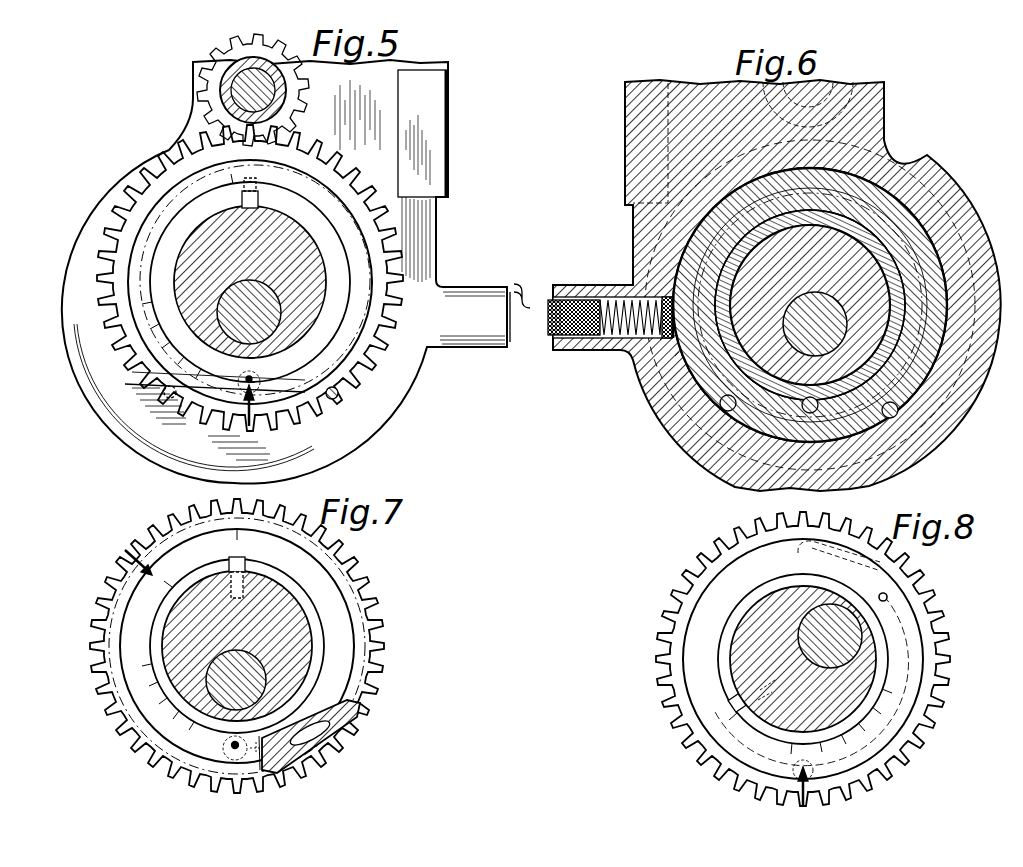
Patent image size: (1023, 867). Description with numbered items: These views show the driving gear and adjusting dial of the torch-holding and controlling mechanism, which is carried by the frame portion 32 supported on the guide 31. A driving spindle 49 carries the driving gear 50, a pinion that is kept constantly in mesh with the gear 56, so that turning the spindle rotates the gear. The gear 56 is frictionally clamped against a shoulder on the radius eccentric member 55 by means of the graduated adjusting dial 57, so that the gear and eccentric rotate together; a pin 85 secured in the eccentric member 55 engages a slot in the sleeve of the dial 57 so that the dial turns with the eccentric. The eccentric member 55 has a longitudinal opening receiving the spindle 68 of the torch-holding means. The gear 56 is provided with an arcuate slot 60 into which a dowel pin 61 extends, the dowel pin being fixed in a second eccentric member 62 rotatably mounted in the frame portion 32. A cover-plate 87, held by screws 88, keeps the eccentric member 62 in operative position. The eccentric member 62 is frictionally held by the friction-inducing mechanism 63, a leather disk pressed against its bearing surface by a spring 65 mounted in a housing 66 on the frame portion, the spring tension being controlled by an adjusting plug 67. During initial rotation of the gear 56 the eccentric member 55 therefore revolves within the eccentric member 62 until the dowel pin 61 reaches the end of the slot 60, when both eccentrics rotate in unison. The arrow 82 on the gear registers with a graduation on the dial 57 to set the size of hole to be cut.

In FIG. 5, the guide 31 is at (440, 102).
In FIG. 6, the guide 31 is at (625, 130).
In FIG. 5, the frame portion 32 is at (70, 366).
In FIG. 6, the frame portion 32 is at (955, 210).
In FIG. 5, the driving spindle 49 is at (258, 66).
In FIG. 5, the driving gear 50 is at (212, 73).
In FIG. 6, the driving gear 50 is at (886, 107).
In FIG. 5, the radius eccentric member 55 is at (200, 230).
In FIG. 6, the radius eccentric member 55 is at (890, 202).
In FIG. 7, the radius eccentric member 55 is at (303, 612).
In FIG. 8, the radius eccentric member 55 is at (731, 633).
In FIG. 5, the gear 56 is at (378, 237).
In FIG. 6, the gear 56 is at (903, 162).
In FIG. 7, the gear 56 is at (365, 627).
In FIG. 8, the gear 56 is at (713, 568).
In FIG. 5, the adjusting dial 57 is at (150, 248).
In FIG. 7, the adjusting dial 57 is at (323, 582).
In FIG. 8, the adjusting dial 57 is at (713, 600).
In FIG. 5, the arcuate slot 60 is at (405, 356).
In FIG. 6, the arcuate slot 60 is at (677, 453).
In FIG. 7, the arcuate slot 60 is at (318, 720).
In FIG. 8, the arcuate slot 60 is at (893, 767).
In FIG. 5, the dowel pin 61 is at (338, 386).
In FIG. 6, the dowel pin 61 is at (713, 477).
In FIG. 7, the dowel pin 61 is at (303, 755).
In FIG. 8, the dowel pin 61 is at (727, 758).
In FIG. 6, the second eccentric member 62 is at (653, 407).
In FIG. 6, the friction-inducing mechanism 63 is at (635, 367).
In FIG. 6, the spring 65 is at (612, 338).
In FIG. 5, the housing 66 is at (462, 287).
In FIG. 6, the housing 66 is at (600, 285).
In FIG. 5, the adjusting plug 67 is at (528, 282).
In FIG. 6, the adjusting plug 67 is at (631, 317).
In FIG. 5, the spindle 68 is at (222, 335).
In FIG. 6, the spindle 68 is at (697, 400).
In FIG. 7, the spindle 68 is at (253, 672).
In FIG. 8, the spindle 68 is at (800, 637).
In FIG. 5, the arrow 82 is at (255, 418).
In FIG. 7, the arrow 82 is at (126, 550).
In FIG. 8, the arrow 82 is at (800, 780).
In FIG. 5, the pin 85 is at (240, 197).
In FIG. 7, the pin 85 is at (243, 562).
In FIG. 8, the pin 85 is at (733, 705).
In FIG. 5, the cover-plate 87 is at (180, 432).
In FIG. 5, the screws 88 is at (152, 390).
In FIG. 6, the screws 88 is at (740, 373).